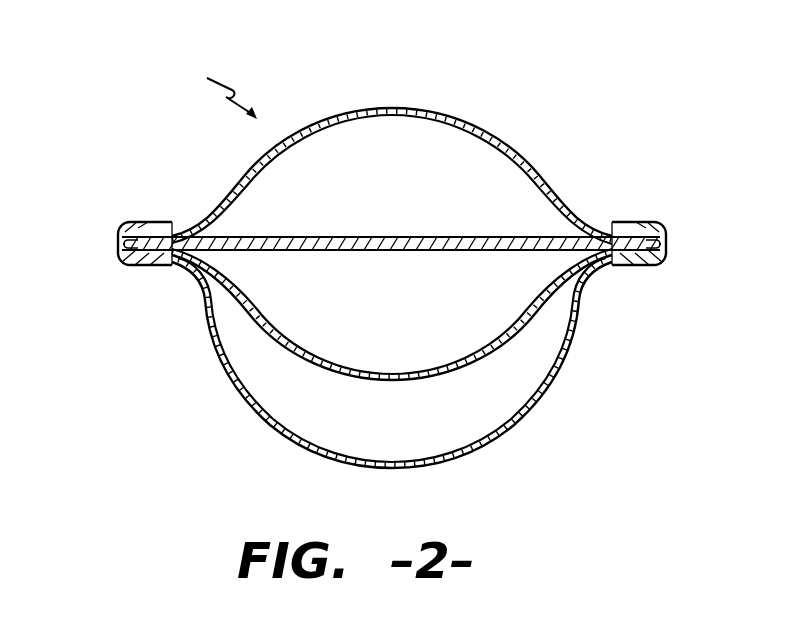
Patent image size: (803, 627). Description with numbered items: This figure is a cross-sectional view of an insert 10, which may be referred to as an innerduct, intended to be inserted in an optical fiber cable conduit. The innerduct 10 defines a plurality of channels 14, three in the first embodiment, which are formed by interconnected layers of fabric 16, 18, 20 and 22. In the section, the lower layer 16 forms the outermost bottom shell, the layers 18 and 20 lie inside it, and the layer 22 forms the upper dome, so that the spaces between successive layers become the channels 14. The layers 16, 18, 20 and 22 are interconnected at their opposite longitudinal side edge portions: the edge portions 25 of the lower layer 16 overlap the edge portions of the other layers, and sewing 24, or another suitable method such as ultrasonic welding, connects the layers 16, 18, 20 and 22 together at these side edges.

The insert 10 is at (215, 84).
The channel 14 is at (401, 176).
The lower layer of fabric 16 is at (250, 403).
The layer of fabric 18 is at (305, 350).
The layer of fabric 20 is at (402, 237).
The layer of fabric 22 is at (490, 137).
The sewing 24 is at (148, 268).
The edge portions 25 is at (124, 246).